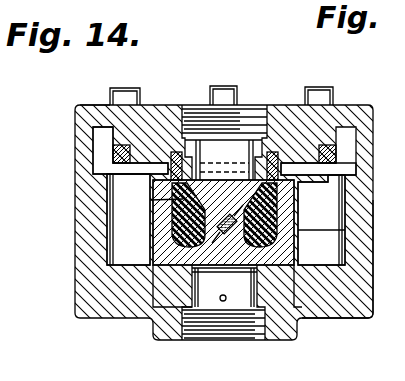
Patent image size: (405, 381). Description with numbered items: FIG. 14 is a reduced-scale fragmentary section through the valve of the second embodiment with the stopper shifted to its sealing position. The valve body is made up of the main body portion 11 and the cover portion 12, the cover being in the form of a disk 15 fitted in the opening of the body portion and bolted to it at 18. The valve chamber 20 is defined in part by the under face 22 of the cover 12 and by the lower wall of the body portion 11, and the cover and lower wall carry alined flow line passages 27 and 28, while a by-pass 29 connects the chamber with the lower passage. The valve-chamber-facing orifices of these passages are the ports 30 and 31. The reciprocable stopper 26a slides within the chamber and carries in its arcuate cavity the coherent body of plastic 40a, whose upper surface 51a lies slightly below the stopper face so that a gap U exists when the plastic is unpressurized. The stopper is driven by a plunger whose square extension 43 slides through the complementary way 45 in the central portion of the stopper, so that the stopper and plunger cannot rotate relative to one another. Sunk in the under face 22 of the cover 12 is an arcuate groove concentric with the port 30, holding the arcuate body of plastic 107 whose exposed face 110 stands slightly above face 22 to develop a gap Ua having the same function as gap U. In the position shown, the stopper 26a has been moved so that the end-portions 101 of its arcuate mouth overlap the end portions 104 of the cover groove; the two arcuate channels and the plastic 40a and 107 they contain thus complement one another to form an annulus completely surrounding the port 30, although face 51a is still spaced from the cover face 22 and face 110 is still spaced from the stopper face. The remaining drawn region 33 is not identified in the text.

The main body portion 11 is at (85, 289).
The cover portion 12 is at (100, 107).
The disk 15 is at (164, 143).
The bolts 18 is at (139, 88).
The valve chamber 20 is at (330, 253).
The under face of cover 22 is at (298, 192).
The stopper 26a is at (110, 238).
The flow line passage 27 is at (196, 107).
The flow line passage 28 is at (190, 340).
The by-pass 29 is at (221, 340).
The port 30 is at (232, 178).
The port 31 is at (215, 272).
The wall 33 is at (288, 272).
The plastic body 40a is at (129, 219).
The plunger extension 43 is at (172, 286).
The way 45 is at (246, 196).
The upper surface of plastic 51a is at (183, 199).
The end-portions of mouth-arc 101 is at (178, 190).
The end portions of groove 104 is at (118, 168).
The arcuate plastic body 107 is at (282, 160).
The exposed face of plastic 110 is at (175, 166).
The gap U is at (321, 219).
The gap Ua is at (318, 165).